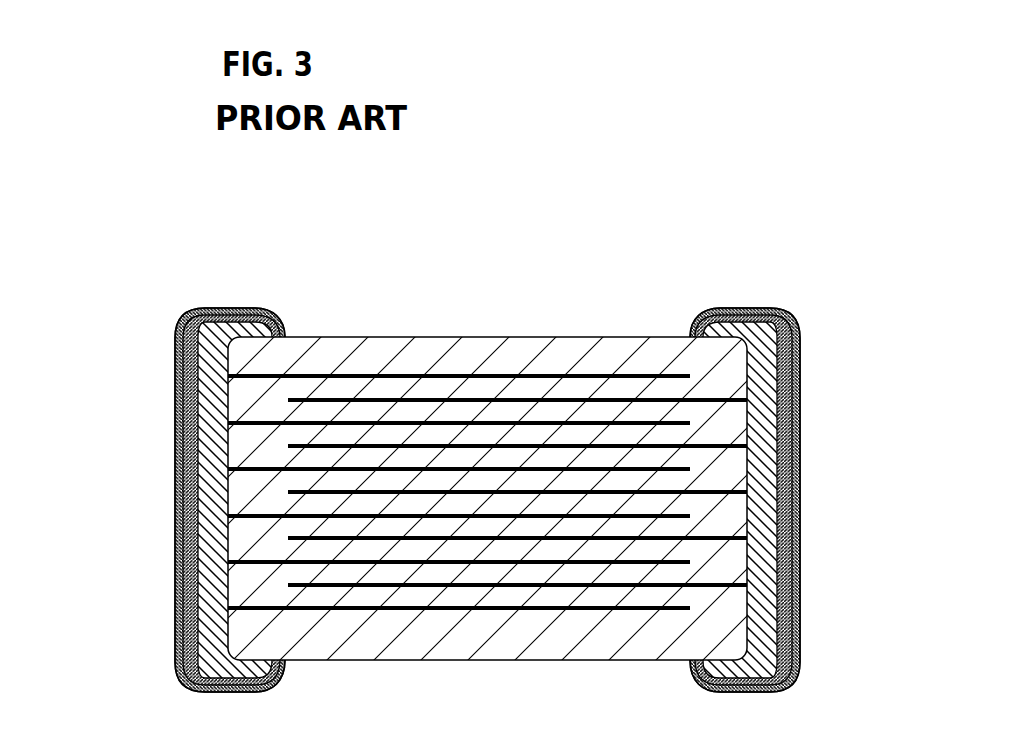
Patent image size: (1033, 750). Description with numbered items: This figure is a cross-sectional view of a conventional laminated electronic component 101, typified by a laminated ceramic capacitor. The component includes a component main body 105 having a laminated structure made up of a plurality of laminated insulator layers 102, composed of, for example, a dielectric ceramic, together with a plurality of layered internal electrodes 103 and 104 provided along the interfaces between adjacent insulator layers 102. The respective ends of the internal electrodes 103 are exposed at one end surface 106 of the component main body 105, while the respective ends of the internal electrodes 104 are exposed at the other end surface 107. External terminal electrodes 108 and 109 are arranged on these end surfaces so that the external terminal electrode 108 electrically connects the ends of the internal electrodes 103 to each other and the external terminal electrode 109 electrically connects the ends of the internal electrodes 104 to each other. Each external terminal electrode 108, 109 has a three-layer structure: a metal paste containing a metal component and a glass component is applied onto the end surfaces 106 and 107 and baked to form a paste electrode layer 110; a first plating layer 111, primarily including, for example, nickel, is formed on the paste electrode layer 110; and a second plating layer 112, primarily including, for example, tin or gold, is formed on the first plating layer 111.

The laminated electronic component 101 is at (272, 221).
The insulator layers 102 is at (513, 408).
The internal electrodes 103 is at (421, 420).
The internal electrodes 104 is at (600, 445).
The component main body 105 is at (651, 339).
The end surface 106 is at (222, 524).
The end surface 107 is at (755, 520).
The external terminal electrode 108 is at (84, 370).
The external terminal electrode 109 is at (886, 338).
The paste electrode layer 110 is at (196, 376).
The first plating layer 111 is at (187, 417).
The second plating layer 112 is at (178, 457).